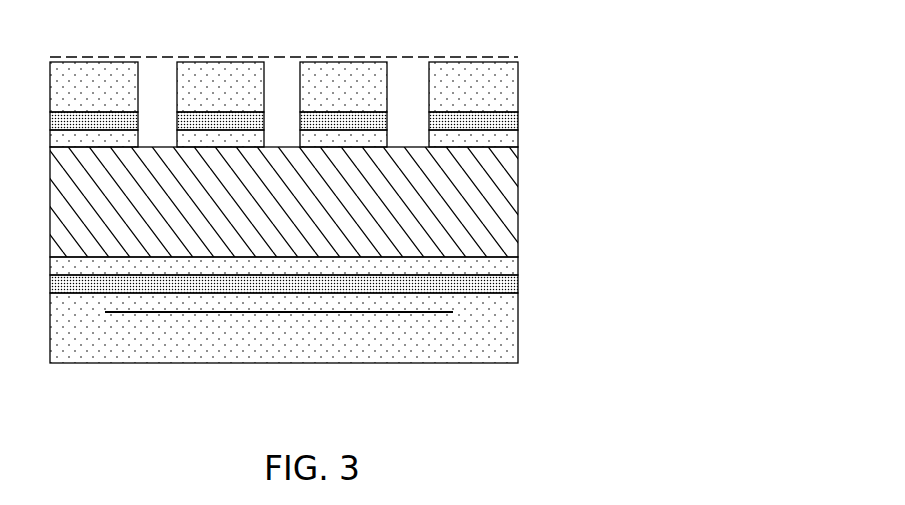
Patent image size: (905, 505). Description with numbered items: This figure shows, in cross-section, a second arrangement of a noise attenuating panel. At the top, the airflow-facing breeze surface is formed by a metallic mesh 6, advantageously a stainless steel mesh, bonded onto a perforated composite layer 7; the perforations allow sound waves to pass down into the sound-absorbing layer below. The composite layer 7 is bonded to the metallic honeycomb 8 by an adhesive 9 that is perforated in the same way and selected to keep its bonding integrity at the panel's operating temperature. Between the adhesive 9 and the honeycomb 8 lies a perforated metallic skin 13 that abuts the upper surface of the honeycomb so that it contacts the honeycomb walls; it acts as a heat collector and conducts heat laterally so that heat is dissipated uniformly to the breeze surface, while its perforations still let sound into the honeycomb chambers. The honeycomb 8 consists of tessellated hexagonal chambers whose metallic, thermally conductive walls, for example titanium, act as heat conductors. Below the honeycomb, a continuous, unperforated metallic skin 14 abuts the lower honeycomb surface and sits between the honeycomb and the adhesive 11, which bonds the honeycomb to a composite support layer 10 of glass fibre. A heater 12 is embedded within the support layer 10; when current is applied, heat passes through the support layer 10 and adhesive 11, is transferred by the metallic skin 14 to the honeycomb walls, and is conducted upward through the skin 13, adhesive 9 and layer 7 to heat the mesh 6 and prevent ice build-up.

The metallic mesh 6 is at (286, 57).
The perforated composite layer 7 is at (518, 90).
The adhesive 9 is at (518, 121).
The perforated metallic skin 13 is at (518, 140).
The metallic honeycomb 8 is at (518, 205).
The metallic skin 14 is at (518, 268).
The adhesive 11 is at (518, 283).
The composite support layer 10 is at (518, 330).
The heater 12 is at (283, 313).